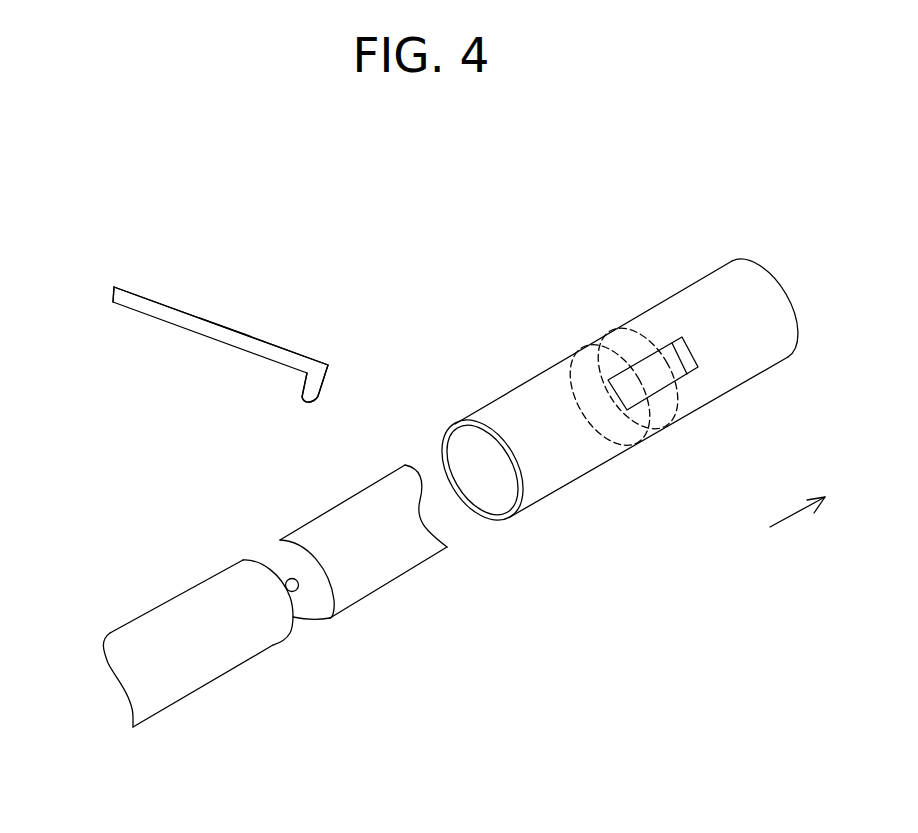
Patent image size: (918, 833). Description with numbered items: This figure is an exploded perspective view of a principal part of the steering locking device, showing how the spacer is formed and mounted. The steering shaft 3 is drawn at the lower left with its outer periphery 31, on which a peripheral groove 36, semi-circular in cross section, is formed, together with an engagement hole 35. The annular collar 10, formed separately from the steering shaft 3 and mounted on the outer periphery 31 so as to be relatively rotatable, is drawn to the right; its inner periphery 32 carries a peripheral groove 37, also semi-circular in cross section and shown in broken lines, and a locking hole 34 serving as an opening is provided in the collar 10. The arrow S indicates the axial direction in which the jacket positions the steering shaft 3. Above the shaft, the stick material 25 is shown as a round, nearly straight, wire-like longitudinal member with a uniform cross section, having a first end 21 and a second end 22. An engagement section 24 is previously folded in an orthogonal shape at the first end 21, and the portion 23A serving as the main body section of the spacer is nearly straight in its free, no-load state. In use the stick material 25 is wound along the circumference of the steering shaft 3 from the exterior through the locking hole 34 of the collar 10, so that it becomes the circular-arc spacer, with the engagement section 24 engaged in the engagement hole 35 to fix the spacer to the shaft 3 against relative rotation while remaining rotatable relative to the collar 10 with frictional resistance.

The steering shaft 3 is at (275, 635).
The annular collar 10 is at (629, 436).
The first end 21 is at (308, 363).
The second end 22 is at (119, 299).
The portion serving as the main body section 23A is at (231, 338).
The engagement section 24 is at (318, 383).
The stick material 25 is at (222, 327).
The outer periphery 31 is at (223, 655).
The inner periphery 32 is at (468, 480).
The locking hole 34 is at (672, 380).
The engagement hole 35 is at (298, 591).
The peripheral groove 36 is at (281, 563).
The peripheral groove 37 is at (618, 332).
The arrow indicating axial direction S is at (814, 494).